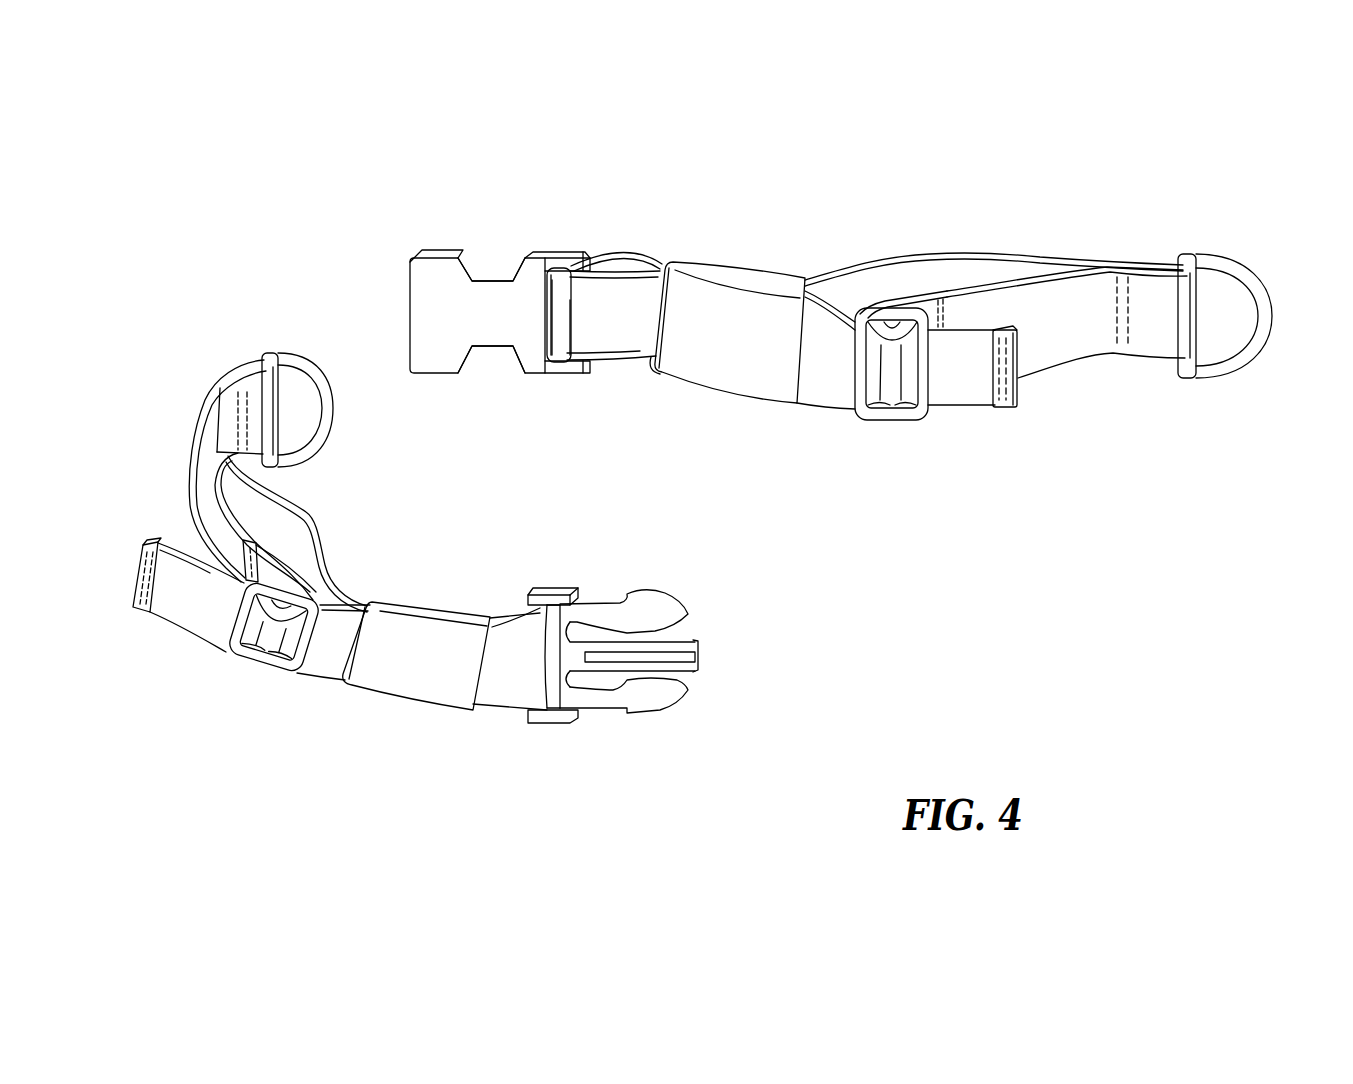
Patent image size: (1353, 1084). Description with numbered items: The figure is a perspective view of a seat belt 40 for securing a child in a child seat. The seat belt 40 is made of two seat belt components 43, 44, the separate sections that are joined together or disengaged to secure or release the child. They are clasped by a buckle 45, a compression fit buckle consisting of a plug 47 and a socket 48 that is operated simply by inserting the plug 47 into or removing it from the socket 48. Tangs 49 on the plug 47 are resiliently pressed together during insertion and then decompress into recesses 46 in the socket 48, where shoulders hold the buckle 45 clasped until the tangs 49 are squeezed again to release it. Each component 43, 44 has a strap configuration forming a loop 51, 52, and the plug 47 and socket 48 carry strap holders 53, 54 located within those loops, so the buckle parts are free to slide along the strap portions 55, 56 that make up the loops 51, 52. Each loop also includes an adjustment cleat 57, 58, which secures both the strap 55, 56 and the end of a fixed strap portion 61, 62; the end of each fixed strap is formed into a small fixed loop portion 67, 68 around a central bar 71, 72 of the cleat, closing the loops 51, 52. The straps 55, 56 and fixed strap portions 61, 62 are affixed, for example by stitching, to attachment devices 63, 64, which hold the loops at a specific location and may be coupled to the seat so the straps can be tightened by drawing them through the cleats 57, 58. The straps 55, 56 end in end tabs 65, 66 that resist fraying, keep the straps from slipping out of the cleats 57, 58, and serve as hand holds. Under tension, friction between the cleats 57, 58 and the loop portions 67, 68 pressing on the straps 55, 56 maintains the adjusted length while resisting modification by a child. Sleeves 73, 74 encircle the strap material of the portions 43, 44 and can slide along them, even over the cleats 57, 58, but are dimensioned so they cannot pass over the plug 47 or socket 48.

The seat belt 40 is at (948, 626).
The seat belt component 43 is at (342, 734).
The seat belt component 44 is at (1046, 210).
The buckle 45 is at (630, 730).
The recesses 46 is at (492, 268).
The plug 47 is at (690, 607).
The socket 48 is at (548, 375).
The tangs 49 is at (660, 590).
The loop 51 is at (273, 533).
The loop 52 is at (848, 292).
The strap holder 53 is at (537, 720).
The strap holder 54 is at (577, 272).
The strap portion 55 is at (193, 620).
The strap portion 56 is at (818, 373).
The adjustment cleat 57 is at (273, 675).
The adjustment cleat 58 is at (915, 418).
The fixed strap portion 61 is at (193, 505).
The fixed strap portion 62 is at (1070, 348).
The attachment device 63 is at (327, 428).
The attachment device 64 is at (1208, 375).
The end tab 65 is at (135, 608).
The end tab 66 is at (1012, 408).
The fixed loop portion 67 is at (295, 568).
The fixed loop portion 68 is at (908, 292).
The central bar 71 is at (253, 660).
The central bar 72 is at (890, 410).
The sleeve 73 is at (418, 683).
The sleeve 74 is at (732, 300).